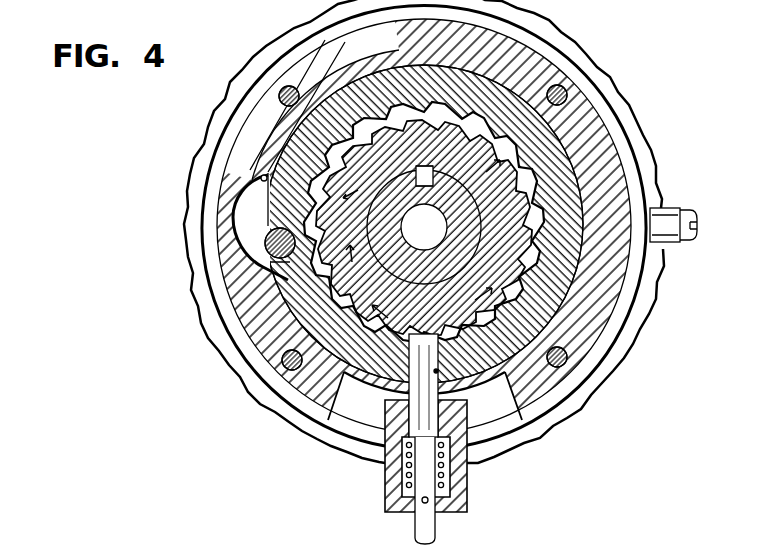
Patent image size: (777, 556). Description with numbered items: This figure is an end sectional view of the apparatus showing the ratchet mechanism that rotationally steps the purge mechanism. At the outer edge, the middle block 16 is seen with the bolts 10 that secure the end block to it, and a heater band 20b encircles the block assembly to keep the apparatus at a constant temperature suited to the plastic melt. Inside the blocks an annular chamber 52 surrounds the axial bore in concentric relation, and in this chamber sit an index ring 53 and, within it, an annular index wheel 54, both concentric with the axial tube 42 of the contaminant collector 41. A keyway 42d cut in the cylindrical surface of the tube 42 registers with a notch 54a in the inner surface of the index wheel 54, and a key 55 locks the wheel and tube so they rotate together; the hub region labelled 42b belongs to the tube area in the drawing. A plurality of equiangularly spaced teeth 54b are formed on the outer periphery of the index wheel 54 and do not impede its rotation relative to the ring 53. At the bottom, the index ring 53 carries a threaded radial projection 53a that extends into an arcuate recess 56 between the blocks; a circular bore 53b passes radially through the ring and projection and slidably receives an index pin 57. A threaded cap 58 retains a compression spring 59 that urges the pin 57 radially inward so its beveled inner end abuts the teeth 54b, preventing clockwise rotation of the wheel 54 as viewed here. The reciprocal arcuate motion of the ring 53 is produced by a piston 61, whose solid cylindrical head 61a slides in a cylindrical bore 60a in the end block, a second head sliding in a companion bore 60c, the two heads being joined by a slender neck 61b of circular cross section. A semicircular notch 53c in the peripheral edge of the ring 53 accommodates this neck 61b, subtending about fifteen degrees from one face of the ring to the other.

The bolts 10 is at (280, 91).
The middle block 16 is at (616, 129).
The heater band 20b is at (607, 84).
The contaminant collector 41 is at (457, 206).
The axial tube 42 is at (442, 230).
The rotor hub bore 42b is at (443, 229).
The keyway 42d is at (414, 181).
The annular chamber 52 is at (425, 66).
The index ring 53 is at (489, 90).
The threaded radial projection 53a is at (382, 422).
The circular bore 53b is at (438, 371).
The notch 53c is at (282, 283).
The index wheel 54 is at (458, 111).
The notch 54a is at (415, 173).
The teeth 54b is at (393, 109).
The key 55 is at (434, 173).
The arcuate recess 56 is at (347, 412).
The index pin 57 is at (420, 382).
The threaded cap 58 is at (385, 500).
The compression spring 59 is at (444, 477).
The cylindrical bore 60a is at (250, 215).
The cylindrical bore 60c is at (262, 178).
The piston 61 is at (297, 185).
The head 61a is at (266, 247).
The neck 61b is at (263, 255).